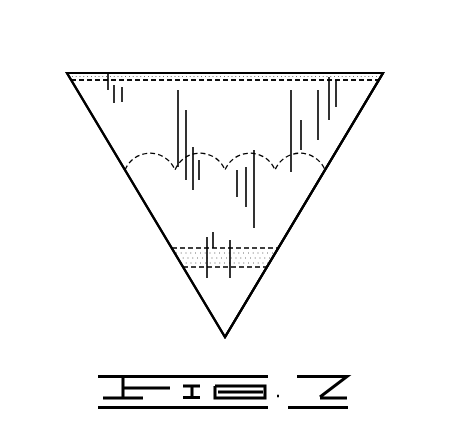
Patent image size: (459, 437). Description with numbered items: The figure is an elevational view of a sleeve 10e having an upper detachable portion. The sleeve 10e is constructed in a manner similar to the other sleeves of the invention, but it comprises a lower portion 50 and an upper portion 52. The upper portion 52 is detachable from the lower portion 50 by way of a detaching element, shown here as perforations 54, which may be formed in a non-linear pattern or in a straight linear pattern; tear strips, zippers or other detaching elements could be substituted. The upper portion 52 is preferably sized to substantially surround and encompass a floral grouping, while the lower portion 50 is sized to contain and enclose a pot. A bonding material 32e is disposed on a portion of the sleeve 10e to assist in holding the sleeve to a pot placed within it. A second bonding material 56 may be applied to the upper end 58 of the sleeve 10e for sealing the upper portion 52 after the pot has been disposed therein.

The sleeve 10e is at (130, 240).
The lower portion 50 is at (311, 193).
The upper portion 52 is at (362, 110).
The perforations 54 is at (315, 158).
The second bonding material 56 is at (312, 72).
The upper end 58 is at (252, 72).
The bonding material 32e is at (253, 248).